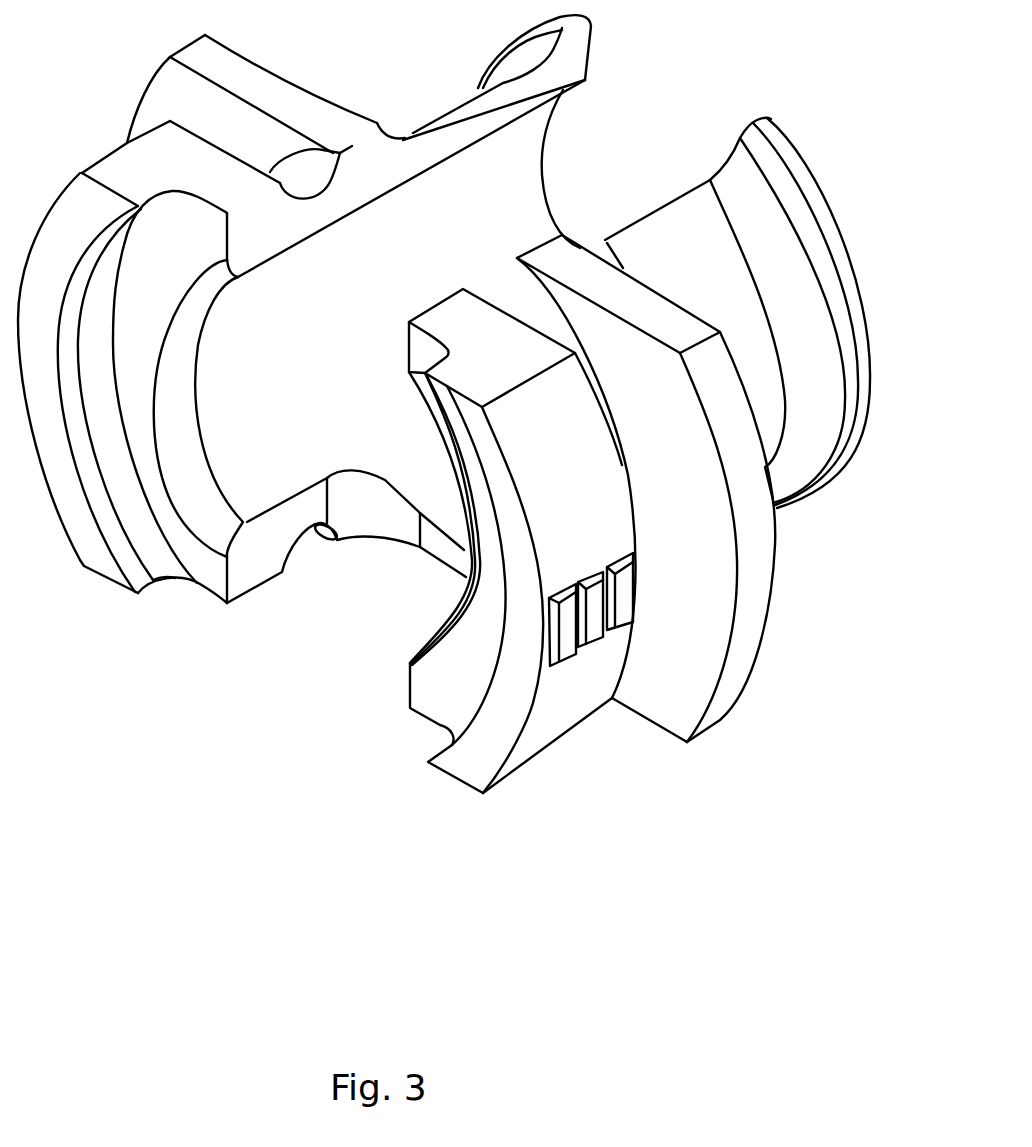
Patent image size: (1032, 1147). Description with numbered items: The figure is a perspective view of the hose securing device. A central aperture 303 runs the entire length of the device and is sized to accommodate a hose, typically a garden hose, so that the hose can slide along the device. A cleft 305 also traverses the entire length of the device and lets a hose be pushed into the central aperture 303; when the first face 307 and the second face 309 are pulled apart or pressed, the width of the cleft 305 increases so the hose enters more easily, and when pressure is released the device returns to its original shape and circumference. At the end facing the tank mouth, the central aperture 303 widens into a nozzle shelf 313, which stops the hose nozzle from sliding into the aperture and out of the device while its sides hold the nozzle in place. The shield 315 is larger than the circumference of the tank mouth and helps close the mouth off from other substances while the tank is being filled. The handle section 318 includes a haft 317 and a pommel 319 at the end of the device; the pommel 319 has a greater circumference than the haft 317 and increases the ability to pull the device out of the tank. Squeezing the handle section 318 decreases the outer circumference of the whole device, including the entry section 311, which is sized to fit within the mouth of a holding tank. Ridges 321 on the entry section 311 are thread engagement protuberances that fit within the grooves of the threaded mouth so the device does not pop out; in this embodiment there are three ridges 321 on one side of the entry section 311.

The central aperture 303 is at (301, 319).
The cleft 305 is at (605, 178).
The first face 307 is at (823, 284).
The second face 309 is at (592, 27).
The entry section 311 is at (592, 703).
The nozzle shelf 313 is at (205, 577).
The shield 315 is at (746, 664).
The haft 317 is at (432, 119).
The handle section 318 is at (657, 226).
The pommel 319 is at (853, 320).
The ridge 321 is at (553, 667).